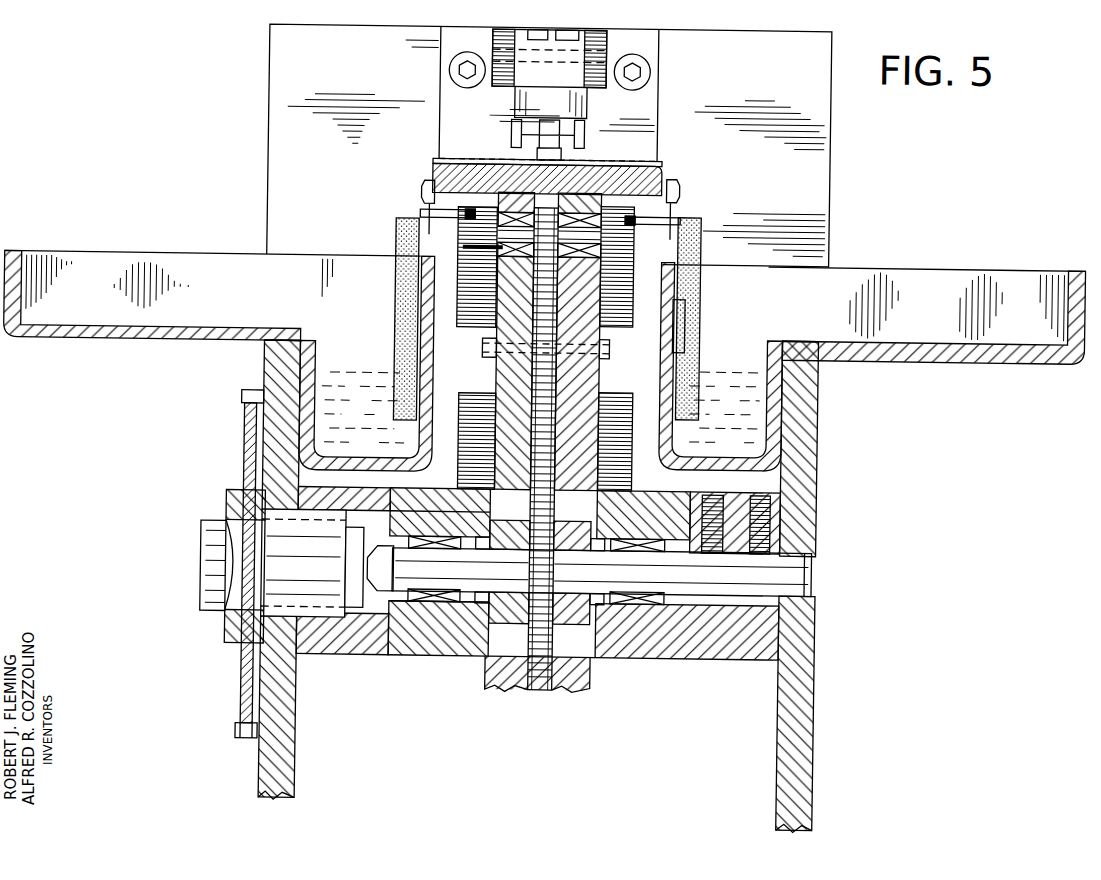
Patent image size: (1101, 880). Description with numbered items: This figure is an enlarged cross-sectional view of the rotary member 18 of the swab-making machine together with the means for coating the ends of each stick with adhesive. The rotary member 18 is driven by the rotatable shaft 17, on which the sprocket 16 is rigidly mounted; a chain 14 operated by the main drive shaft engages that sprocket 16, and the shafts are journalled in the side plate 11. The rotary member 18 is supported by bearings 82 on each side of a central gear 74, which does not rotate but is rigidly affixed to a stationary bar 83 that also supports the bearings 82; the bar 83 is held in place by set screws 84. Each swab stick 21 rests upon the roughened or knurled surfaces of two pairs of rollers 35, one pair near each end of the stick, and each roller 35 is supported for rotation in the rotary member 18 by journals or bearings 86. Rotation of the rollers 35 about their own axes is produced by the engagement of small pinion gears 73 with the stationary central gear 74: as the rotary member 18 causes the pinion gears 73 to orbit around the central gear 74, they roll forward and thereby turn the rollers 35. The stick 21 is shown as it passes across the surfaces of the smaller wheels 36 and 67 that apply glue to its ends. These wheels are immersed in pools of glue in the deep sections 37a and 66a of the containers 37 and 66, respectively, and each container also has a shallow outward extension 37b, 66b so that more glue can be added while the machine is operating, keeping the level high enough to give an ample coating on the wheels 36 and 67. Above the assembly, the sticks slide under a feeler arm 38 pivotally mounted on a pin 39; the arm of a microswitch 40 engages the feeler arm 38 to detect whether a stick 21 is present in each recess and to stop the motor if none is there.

The side plate 11 is at (264, 781).
The chain 14 is at (239, 734).
The sprocket 16 is at (246, 685).
The rotatable shaft 17 is at (202, 573).
The rotary member 18 is at (598, 384).
The swab stick 21 is at (417, 214).
The roller 35 is at (627, 309).
The wheel 36 is at (693, 238).
The container 37 is at (950, 355).
The deep section 37a is at (779, 420).
The shallow outward extension 37b is at (921, 278).
The feeler arm 38 is at (659, 172).
The pin 39 is at (421, 190).
The microswitch 40 is at (549, 95).
The container 66 is at (124, 347).
The deep section 66a is at (427, 394).
The shallow outward extension 66b is at (103, 268).
The wheel 67 is at (395, 241).
The pinion gear 73 is at (460, 250).
The central gear 74 is at (541, 677).
The bearing 82 is at (447, 601).
The stationary bar 83 is at (797, 575).
The set screw 84 is at (758, 506).
The journal 86 is at (513, 210).